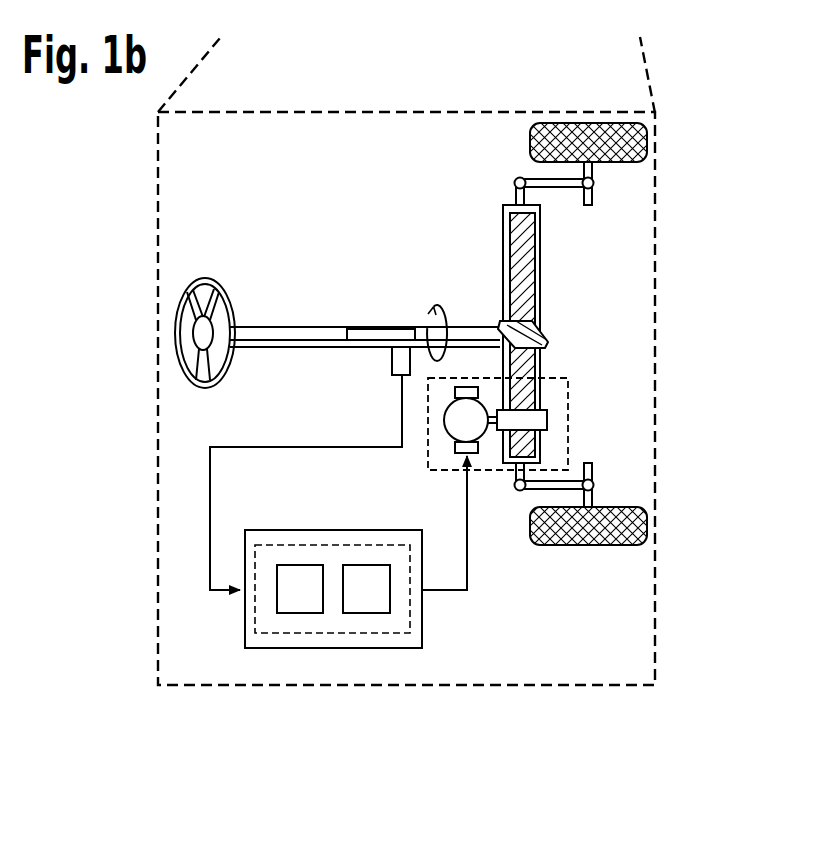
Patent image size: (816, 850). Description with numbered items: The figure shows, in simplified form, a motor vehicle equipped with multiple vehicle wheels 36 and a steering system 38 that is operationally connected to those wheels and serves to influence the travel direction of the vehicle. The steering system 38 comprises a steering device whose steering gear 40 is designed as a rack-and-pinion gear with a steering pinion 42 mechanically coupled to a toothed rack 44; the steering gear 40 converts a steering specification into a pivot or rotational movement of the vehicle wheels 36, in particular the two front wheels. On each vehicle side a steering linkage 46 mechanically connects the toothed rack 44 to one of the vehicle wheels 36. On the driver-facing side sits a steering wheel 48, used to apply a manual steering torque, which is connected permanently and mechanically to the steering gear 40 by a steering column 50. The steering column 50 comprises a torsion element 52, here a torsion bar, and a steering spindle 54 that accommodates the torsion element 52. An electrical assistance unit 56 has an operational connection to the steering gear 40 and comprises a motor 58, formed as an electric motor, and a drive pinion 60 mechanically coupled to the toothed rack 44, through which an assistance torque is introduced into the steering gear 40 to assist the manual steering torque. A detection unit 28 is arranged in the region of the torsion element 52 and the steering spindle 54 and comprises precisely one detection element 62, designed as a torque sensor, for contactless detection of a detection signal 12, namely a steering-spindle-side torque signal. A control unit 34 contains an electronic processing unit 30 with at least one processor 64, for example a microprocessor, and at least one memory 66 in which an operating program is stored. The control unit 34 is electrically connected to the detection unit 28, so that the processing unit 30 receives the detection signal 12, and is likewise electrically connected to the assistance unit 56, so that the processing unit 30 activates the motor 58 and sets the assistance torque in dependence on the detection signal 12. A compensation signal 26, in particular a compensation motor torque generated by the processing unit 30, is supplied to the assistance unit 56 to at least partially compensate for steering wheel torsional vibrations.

The detection signal 12 is at (209, 520).
The compensation signal 26 is at (454, 596).
The detection unit 28 is at (372, 357).
The processing unit 30 is at (340, 545).
The control unit 34 is at (286, 516).
The vehicle wheels 36 is at (647, 143).
The steering system 38 is at (676, 207).
The steering gear 40 is at (497, 250).
The steering pinion 42 is at (548, 338).
The toothed rack 44 is at (524, 270).
The steering linkage 46 is at (516, 178).
The steering wheel 48 is at (193, 282).
The steering column 50 is at (375, 295).
The torsion element 52 is at (363, 326).
The steering spindle 54 is at (404, 308).
The assistance unit 56 is at (575, 400).
The motor 58 is at (451, 437).
The drive pinion 60 is at (547, 420).
The detection element 62 is at (393, 378).
The processor 64 is at (300, 600).
The memory 66 is at (365, 600).